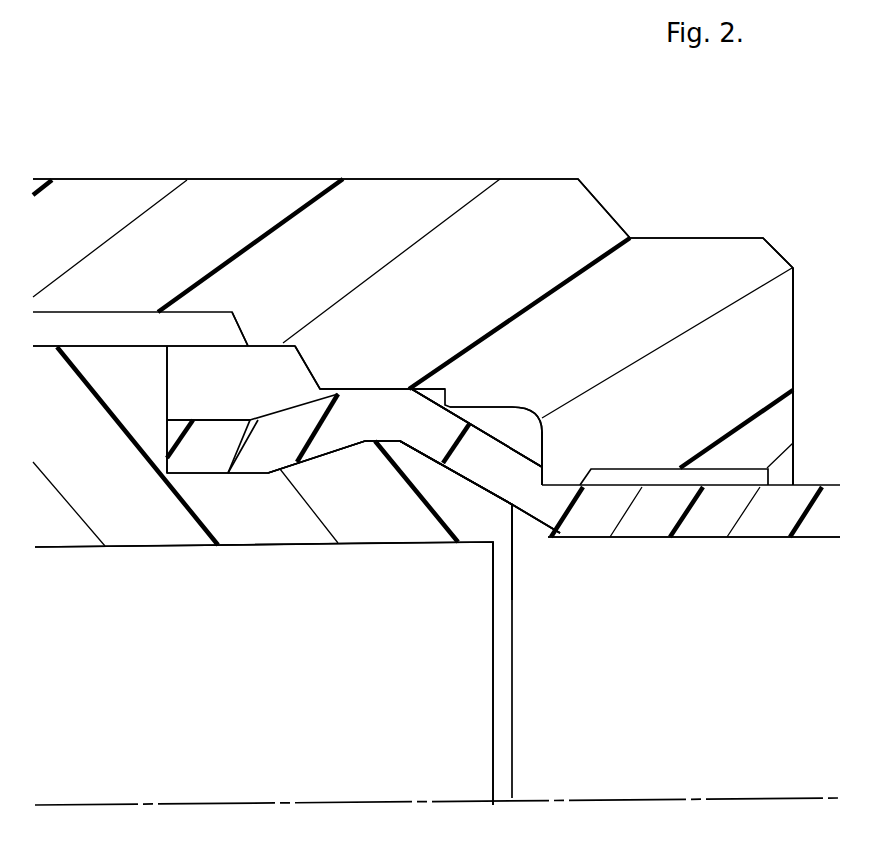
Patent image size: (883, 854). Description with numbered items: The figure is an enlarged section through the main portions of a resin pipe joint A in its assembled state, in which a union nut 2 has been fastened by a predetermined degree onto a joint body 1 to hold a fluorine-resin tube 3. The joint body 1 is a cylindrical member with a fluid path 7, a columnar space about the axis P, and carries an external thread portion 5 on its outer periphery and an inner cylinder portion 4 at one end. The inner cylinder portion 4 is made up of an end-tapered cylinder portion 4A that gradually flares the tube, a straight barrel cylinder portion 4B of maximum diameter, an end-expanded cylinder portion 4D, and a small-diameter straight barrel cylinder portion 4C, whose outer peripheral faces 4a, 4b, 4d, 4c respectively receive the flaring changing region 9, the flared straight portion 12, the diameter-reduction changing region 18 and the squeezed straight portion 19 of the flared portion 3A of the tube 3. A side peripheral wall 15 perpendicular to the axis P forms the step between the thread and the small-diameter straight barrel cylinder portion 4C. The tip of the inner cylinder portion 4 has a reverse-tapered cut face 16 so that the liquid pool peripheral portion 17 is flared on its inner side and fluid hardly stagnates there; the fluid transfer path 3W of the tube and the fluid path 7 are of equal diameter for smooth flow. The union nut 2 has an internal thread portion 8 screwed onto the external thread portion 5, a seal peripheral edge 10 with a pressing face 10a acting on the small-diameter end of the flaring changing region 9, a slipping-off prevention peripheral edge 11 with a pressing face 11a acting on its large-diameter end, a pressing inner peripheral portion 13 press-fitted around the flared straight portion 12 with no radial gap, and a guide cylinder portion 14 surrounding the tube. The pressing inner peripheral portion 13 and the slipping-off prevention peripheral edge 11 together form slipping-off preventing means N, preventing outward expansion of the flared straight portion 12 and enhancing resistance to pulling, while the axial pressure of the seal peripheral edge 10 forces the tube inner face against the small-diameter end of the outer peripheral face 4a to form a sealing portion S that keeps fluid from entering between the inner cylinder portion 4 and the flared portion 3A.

The joint body 1 is at (52, 378).
The union nut 2 is at (542, 176).
The tube 3 is at (830, 495).
The flared portion 3A is at (298, 405).
The fluid transfer path 3W is at (694, 634).
The inner cylinder portion 4 is at (402, 678).
The end-tapered cylinder portion 4A is at (457, 507).
The straight barrel cylinder portion 4B is at (372, 542).
The small-diameter straight barrel cylinder portion 4C is at (213, 513).
The end-expanded cylinder portion 4D is at (312, 490).
The outer peripheral face of end-tapered cylinder portion 4a is at (485, 492).
The outer peripheral face of straight barrel cylinder portion 4b is at (386, 432).
The outer peripheral face of small-diameter straight barrel cylinder portion 4c is at (205, 465).
The outer peripheral face of end-expanded cylinder portion 4d is at (346, 437).
The external thread portion 5 is at (110, 318).
The fluid path 7 is at (263, 576).
The internal thread portion 8 is at (211, 335).
The flaring changing region 9 is at (487, 443).
The seal peripheral edge 10 is at (560, 533).
The pressing face 10a is at (543, 420).
The slipping-off prevention peripheral edge 11 is at (461, 407).
The pressing face 11a is at (407, 393).
The flared straight portion 12 is at (383, 390).
The pressing inner peripheral portion 13 is at (445, 403).
The guide cylinder portion 14 is at (717, 460).
The side peripheral wall 15 is at (167, 377).
The cut face 16 is at (513, 540).
The liquid pool peripheral portion 17 is at (520, 525).
The diameter-reduction changing region 18 is at (279, 444).
The squeezed straight portion 19 is at (195, 433).
The resin pipe joint A is at (680, 215).
The slipping-off preventing means N is at (527, 264).
The sealing portion S is at (511, 500).
The axis P is at (746, 798).